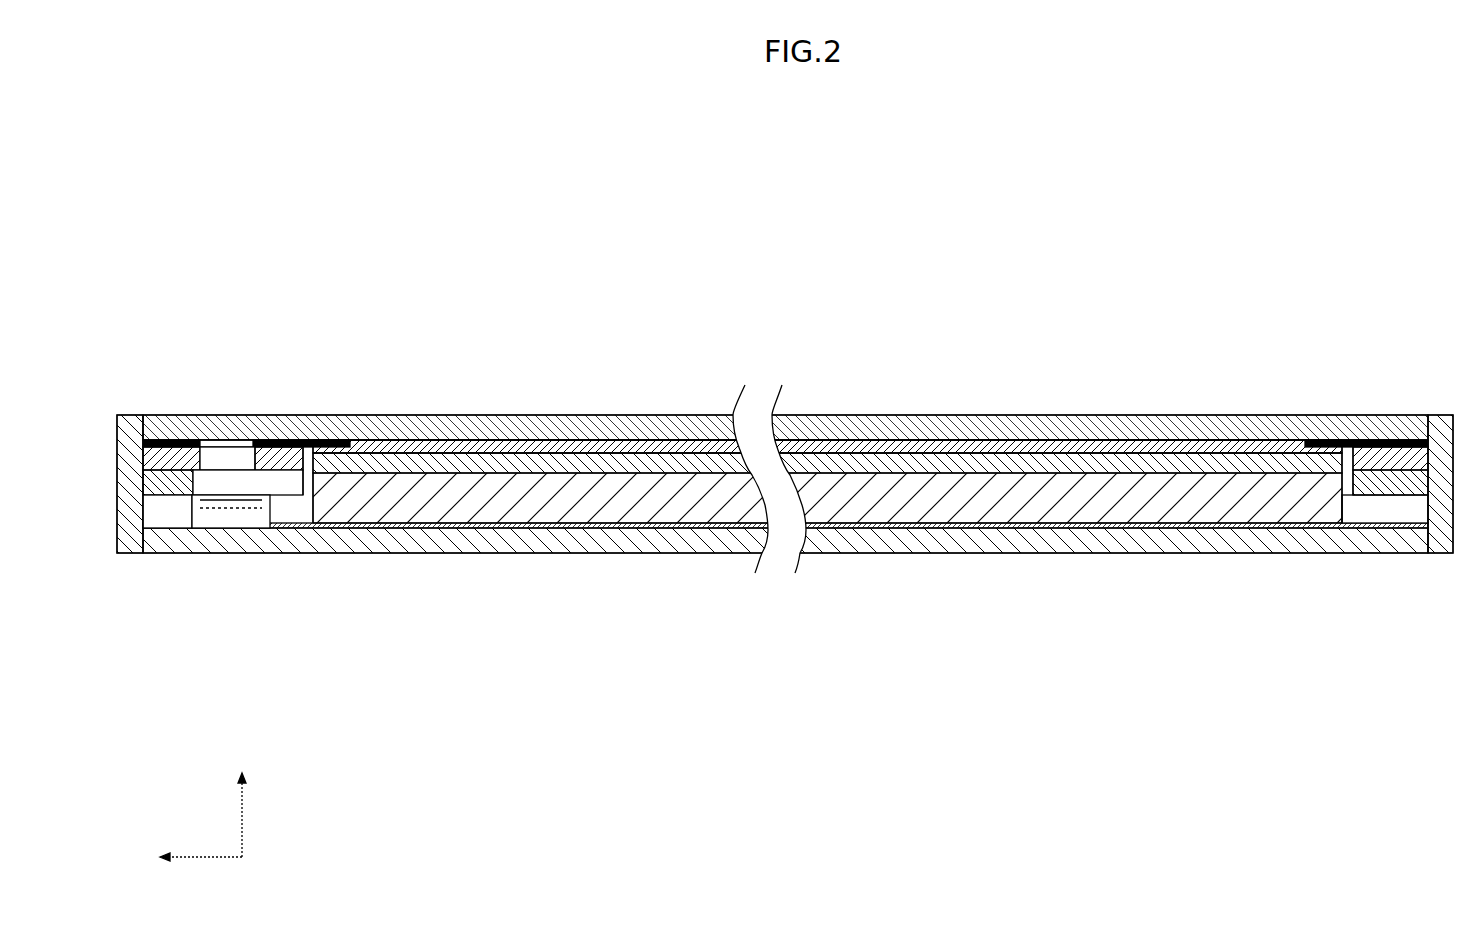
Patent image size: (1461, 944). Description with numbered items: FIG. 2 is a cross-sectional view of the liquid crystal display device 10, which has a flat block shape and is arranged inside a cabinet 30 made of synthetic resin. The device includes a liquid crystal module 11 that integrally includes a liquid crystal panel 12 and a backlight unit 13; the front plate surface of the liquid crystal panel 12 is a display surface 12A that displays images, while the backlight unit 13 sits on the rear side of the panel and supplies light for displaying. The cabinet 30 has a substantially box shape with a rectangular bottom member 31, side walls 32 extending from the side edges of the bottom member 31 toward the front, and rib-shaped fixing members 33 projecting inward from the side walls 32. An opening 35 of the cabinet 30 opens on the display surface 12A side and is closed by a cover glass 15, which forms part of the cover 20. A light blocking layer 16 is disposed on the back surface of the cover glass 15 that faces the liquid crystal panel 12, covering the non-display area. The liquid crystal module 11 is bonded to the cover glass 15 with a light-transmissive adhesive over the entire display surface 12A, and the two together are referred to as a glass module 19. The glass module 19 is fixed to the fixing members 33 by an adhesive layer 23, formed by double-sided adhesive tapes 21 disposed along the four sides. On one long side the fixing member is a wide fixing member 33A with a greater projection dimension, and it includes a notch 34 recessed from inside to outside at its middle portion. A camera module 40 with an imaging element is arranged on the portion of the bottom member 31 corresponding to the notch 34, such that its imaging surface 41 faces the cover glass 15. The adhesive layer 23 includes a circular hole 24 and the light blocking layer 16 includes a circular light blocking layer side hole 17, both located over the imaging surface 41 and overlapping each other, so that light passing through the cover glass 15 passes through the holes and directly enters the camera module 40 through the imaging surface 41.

The liquid crystal display device 10 is at (645, 165).
The liquid crystal module 11 is at (1208, 345).
The liquid crystal panel 12 is at (1123, 460).
The display surface 12A is at (1090, 450).
The backlight unit 13 is at (1182, 497).
The cover glass 15 is at (1248, 445).
The light blocking layer 16 is at (1318, 447).
The light blocking layer side hole 17 is at (247, 443).
The glass module 19 is at (1143, 304).
The cover 20 is at (1420, 256).
The double-sided adhesive tape 21 is at (785, 357).
The adhesive layer 23 is at (1370, 440).
The hole 24 is at (207, 458).
The cabinet 30 is at (1297, 618).
The bottom member 31 is at (1420, 545).
The side wall 32 is at (1427, 507).
The fixing member 33 is at (1343, 515).
The wide fixing member 33A is at (150, 455).
The notch 34 is at (197, 482).
The opening 35 is at (1418, 420).
The camera module 40 is at (233, 505).
The imaging surface 41 is at (250, 497).